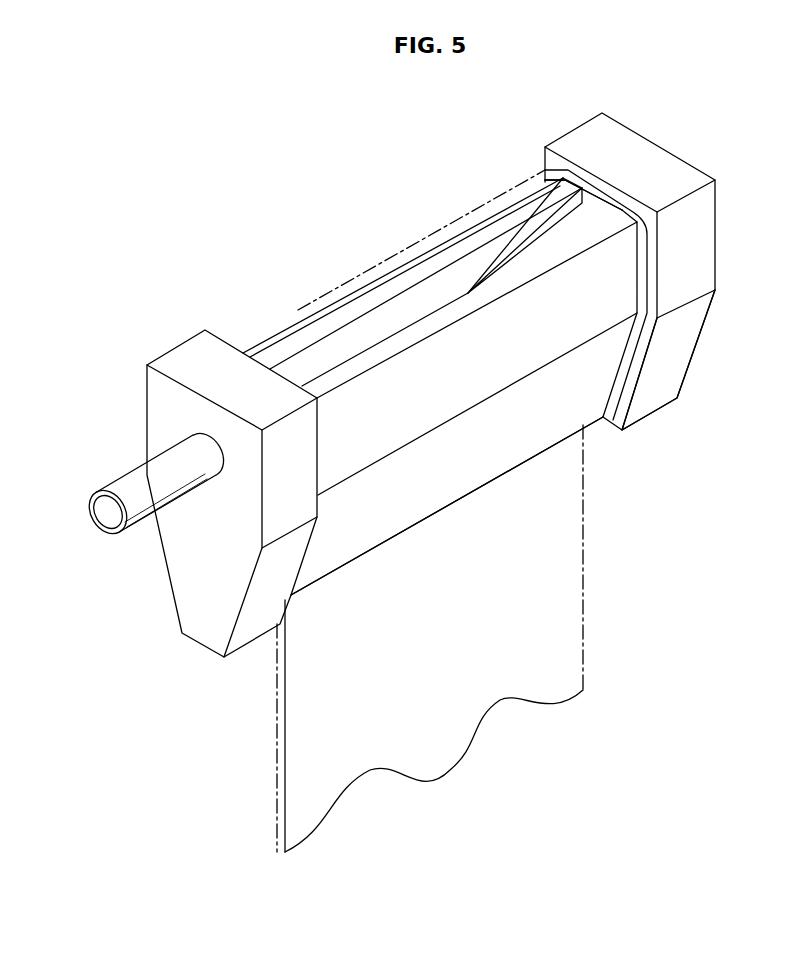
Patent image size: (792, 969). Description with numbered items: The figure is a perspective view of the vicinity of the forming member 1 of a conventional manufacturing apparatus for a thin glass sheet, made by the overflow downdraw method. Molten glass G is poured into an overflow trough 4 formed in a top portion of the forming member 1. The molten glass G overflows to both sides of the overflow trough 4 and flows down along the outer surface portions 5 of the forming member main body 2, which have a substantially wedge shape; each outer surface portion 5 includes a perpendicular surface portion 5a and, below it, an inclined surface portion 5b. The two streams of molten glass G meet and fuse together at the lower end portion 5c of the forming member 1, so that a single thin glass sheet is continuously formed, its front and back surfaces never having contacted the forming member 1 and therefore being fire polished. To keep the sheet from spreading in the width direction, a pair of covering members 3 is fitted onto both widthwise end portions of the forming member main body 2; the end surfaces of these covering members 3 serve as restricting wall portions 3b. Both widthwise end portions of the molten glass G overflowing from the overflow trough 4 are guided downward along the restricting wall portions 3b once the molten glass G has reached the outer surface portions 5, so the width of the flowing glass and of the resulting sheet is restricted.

The forming member 1 is at (441, 176).
The forming member main body 2 is at (306, 287).
The covering member 3 is at (225, 370).
The restricting wall portion 3b is at (633, 368).
The overflow trough 4 is at (540, 248).
The outer surface portion 5 is at (464, 396).
The perpendicular surface portion 5a is at (405, 412).
The inclined surface portion 5b is at (380, 515).
The lower end portion 5c is at (337, 570).
The molten glass G is at (406, 254).